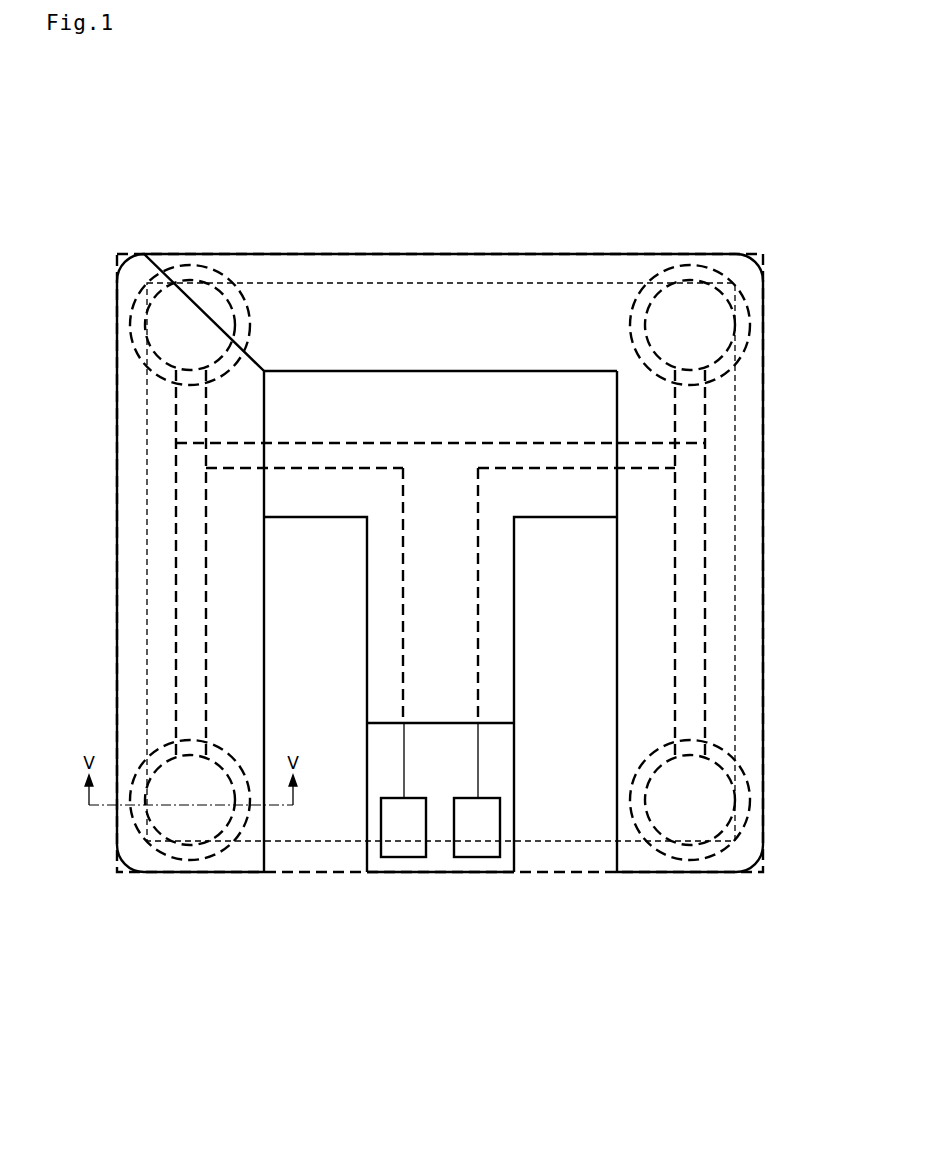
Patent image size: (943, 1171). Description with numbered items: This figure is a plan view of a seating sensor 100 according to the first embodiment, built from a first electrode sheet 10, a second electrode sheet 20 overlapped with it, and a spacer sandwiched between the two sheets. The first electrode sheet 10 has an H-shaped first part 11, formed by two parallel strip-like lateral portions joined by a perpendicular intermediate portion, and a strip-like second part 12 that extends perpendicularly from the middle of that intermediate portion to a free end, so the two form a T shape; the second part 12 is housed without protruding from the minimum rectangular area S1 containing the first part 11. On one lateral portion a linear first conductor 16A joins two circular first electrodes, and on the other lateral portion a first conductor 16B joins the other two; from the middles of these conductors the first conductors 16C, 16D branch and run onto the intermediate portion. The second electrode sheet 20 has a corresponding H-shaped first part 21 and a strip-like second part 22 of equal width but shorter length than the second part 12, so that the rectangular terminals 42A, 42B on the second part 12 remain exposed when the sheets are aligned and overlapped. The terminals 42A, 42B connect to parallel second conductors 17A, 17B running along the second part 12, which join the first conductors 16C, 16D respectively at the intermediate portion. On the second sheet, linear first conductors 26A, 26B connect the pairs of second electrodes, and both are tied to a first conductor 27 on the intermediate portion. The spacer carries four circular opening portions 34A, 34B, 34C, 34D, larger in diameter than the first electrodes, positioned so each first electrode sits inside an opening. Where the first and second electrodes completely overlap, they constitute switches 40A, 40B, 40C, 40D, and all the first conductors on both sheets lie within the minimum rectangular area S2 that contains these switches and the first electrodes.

The seating sensor 100 is at (662, 210).
The minimum rectangular area containing the first part S1 is at (543, 254).
The minimum rectangular area containing the first electrodes S2 is at (487, 283).
The first electrode sheet 10 is at (515, 825).
The first part 11 is at (380, 402).
The second part 12 is at (508, 768).
The first conductor 16A is at (207, 590).
The first conductor 16B is at (673, 570).
The first conductor 16C is at (298, 470).
The first conductor 16D is at (555, 470).
The second conductor 17A is at (403, 548).
The second conductor 17B is at (480, 575).
The second electrode sheet 20 is at (293, 371).
The first part 21 is at (337, 388).
The second part 22 is at (500, 640).
The first conductor 26A is at (175, 547).
The first conductor 26B is at (706, 545).
The first conductor 27 is at (522, 443).
The opening portion 34A is at (228, 838).
The opening portion 34B is at (244, 323).
The opening portion 34C is at (742, 803).
The opening portion 34D is at (745, 325).
The switch 40A is at (190, 822).
The switch 40B is at (213, 305).
The switch 40C is at (683, 818).
The switch 40D is at (705, 305).
The terminal 42A is at (396, 835).
The terminal 42B is at (477, 835).